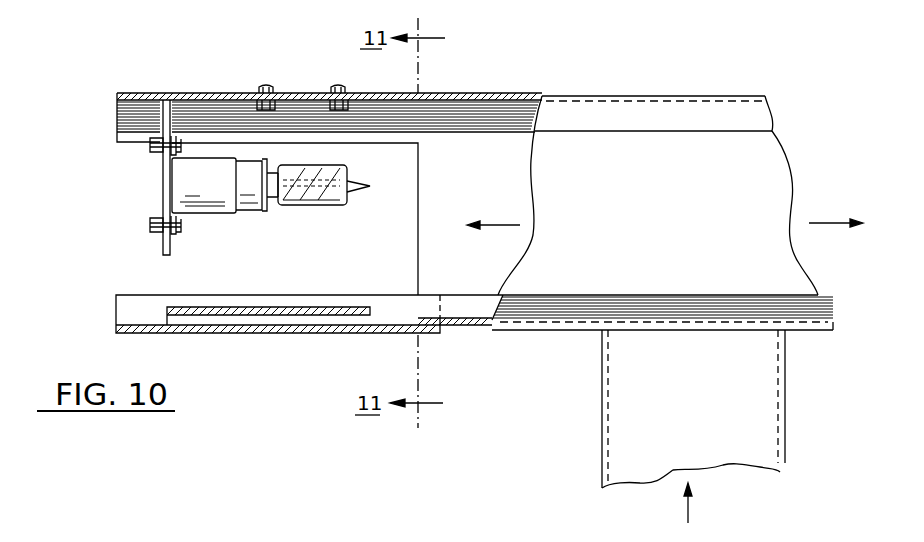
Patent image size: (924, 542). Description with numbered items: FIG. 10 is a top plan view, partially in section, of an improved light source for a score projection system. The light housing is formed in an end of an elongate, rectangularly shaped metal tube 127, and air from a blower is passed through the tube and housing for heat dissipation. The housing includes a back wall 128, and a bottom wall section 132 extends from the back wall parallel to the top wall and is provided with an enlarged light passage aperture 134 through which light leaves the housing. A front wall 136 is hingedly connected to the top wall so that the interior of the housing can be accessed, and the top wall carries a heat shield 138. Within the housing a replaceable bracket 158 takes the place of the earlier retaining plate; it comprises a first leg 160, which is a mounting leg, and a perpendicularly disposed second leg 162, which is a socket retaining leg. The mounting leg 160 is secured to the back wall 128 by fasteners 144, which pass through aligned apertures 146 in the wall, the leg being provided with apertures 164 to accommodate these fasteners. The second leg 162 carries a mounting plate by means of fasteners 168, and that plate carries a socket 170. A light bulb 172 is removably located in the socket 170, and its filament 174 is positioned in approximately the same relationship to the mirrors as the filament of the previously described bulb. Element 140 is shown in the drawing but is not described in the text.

The rectangularly shaped metal tube 127 is at (493, 96).
The back wall 128 is at (147, 93).
The bottom wall section 132 is at (117, 142).
The light passage aperture 134 is at (140, 260).
The front wall 136 is at (254, 333).
The heat shield 138 is at (348, 307).
The post 140 is at (757, 450).
The fasteners 144 is at (277, 87).
The apertures 146 is at (257, 102).
The bracket 158 is at (150, 116).
The first leg 160 is at (183, 100).
The second leg 162 is at (170, 252).
The apertures 164 is at (287, 106).
The fasteners 168 is at (173, 148).
The socket 170 is at (190, 197).
The light bulb 172 is at (343, 200).
The filament 174 is at (298, 206).